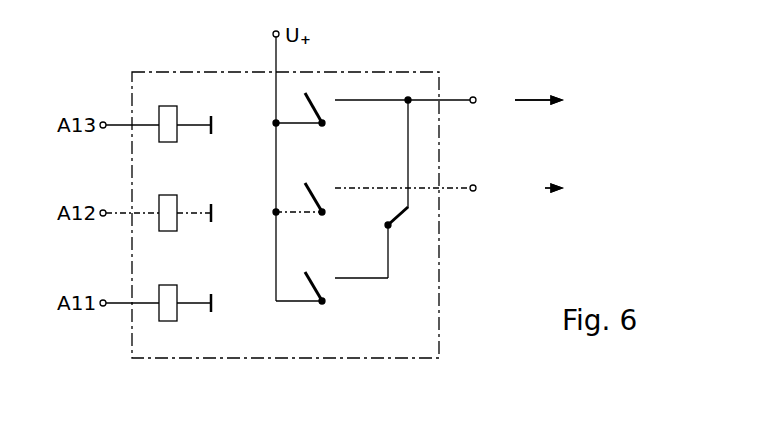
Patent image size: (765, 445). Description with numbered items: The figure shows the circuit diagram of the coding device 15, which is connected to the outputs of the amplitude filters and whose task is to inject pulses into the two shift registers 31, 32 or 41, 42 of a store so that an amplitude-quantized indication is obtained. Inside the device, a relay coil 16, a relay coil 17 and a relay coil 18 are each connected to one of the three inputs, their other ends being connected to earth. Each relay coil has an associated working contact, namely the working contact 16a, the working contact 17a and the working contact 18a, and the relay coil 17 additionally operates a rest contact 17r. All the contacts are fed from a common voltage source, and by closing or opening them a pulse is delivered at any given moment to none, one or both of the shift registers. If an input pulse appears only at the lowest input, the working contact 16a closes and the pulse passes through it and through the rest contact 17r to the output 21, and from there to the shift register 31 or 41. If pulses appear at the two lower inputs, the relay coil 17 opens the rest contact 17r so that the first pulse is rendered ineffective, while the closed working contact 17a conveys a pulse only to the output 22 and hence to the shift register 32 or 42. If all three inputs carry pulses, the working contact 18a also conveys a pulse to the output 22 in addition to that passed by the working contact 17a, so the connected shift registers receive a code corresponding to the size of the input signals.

The coding device 15 is at (352, 343).
The relay coil 16 is at (165, 311).
The relay coil 17 is at (165, 222).
The relay coil 18 is at (165, 133).
The working contact 16a is at (323, 293).
The working contact 17a is at (373, 212).
The working contact 18a is at (342, 115).
The rest contact 17r is at (373, 187).
The output 21 is at (457, 99).
The output 22 is at (490, 187).
The shift register 31 is at (569, 99).
The shift register 41 is at (538, 100).
The shift register 32 is at (584, 187).
The shift register 42 is at (553, 188).